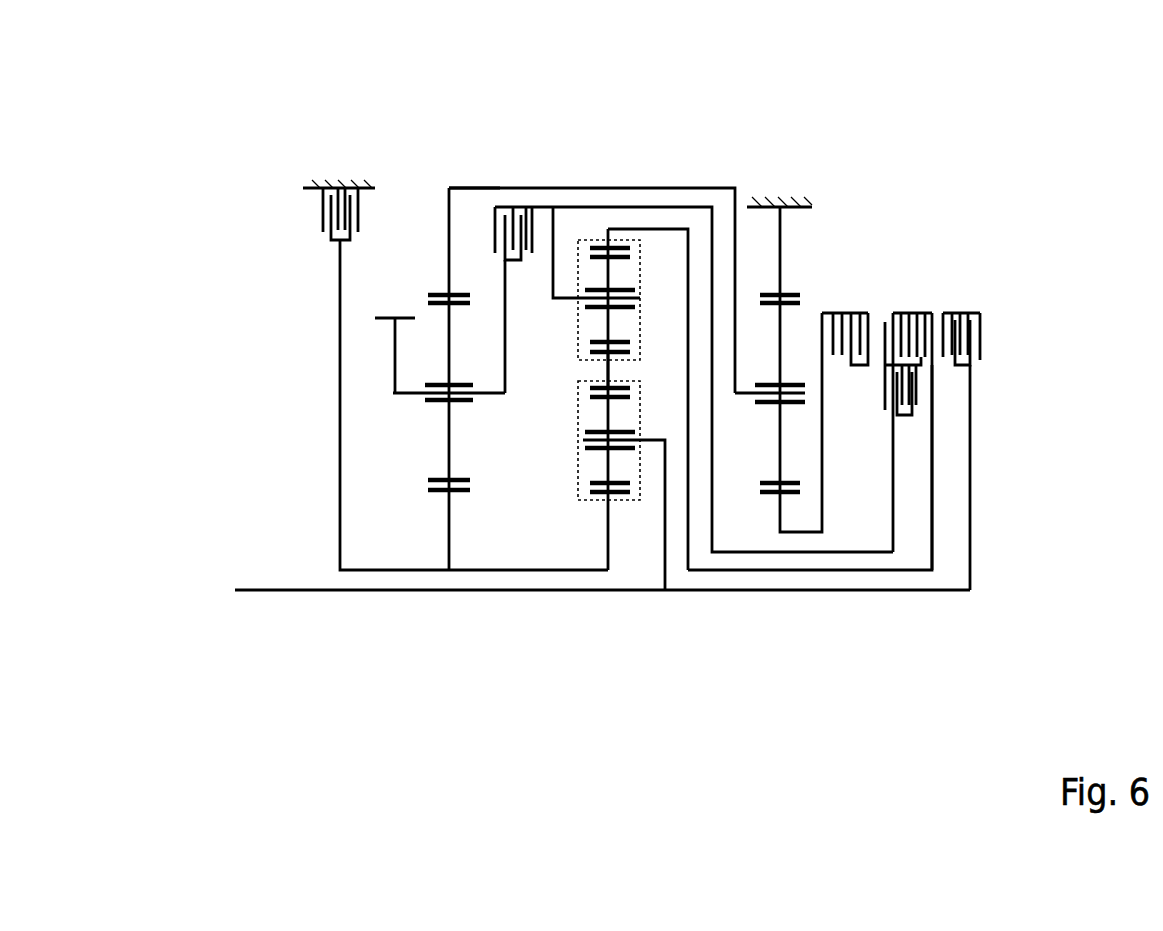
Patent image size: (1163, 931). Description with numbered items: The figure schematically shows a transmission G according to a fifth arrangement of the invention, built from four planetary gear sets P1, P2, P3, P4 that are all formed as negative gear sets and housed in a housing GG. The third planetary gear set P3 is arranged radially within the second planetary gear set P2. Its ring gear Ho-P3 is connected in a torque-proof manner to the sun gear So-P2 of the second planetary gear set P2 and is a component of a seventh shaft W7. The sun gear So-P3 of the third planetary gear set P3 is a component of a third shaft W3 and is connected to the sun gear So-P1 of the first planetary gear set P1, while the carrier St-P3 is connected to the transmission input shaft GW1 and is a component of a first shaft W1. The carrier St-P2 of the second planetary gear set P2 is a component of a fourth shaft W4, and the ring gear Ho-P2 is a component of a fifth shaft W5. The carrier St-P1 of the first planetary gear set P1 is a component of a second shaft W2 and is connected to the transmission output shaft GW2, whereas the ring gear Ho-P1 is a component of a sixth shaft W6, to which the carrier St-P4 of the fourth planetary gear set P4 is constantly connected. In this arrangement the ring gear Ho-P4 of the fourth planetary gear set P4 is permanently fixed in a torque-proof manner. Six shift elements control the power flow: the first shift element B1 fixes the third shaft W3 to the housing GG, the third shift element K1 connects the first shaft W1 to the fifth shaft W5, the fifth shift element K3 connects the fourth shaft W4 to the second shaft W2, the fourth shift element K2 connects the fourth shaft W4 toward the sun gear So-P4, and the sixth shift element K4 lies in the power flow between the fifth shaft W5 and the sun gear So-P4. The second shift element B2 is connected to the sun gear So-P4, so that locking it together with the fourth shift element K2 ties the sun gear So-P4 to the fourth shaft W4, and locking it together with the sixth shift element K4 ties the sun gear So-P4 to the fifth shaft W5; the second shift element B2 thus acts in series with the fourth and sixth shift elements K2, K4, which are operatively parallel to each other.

The transmission input shaft GW1 is at (272, 594).
The transmission output shaft GW2 is at (392, 316).
The first shaft W1 is at (975, 528).
The second shaft W2 is at (393, 372).
The third shaft W3 is at (338, 514).
The fourth shaft W4 is at (545, 200).
The fifth shaft W5 is at (933, 458).
The sixth shaft W6 is at (712, 188).
The seventh shaft W7 is at (603, 366).
The first shift element B1 is at (318, 222).
The second shift element B2 is at (852, 307).
The third shift element K1 is at (985, 333).
The fourth shift element K2 is at (928, 388).
The fifth shift element K3 is at (478, 226).
The sixth shift element K4 is at (918, 303).
The transmission G is at (797, 146).
The housing GG is at (782, 203).
The first planetary gear set P1 is at (449, 178).
The second planetary gear set P2 is at (587, 226).
The third planetary gear set P3 is at (588, 504).
The fourth planetary gear set P4 is at (778, 596).
The ring gear of the first planetary gear set Ho-P1 is at (442, 291).
The sun gear of the first planetary gear set So-P1 is at (440, 495).
The carrier of the first planetary gear set St-P1 is at (413, 394).
The ring gear of the second planetary gear set Ho-P2 is at (622, 244).
The sun gear of the second planetary gear set So-P2 is at (592, 355).
The carrier of the second planetary gear set St-P2 is at (568, 292).
The ring gear of the third planetary gear set Ho-P3 is at (622, 386).
The sun gear of the third planetary gear set So-P3 is at (615, 494).
The carrier of the third planetary gear set St-P3 is at (651, 446).
The ring gear of the fourth planetary gear set Ho-P4 is at (793, 290).
The sun gear of the fourth planetary gear set So-P4 is at (793, 496).
The carrier of the fourth planetary gear set St-P4 is at (745, 397).